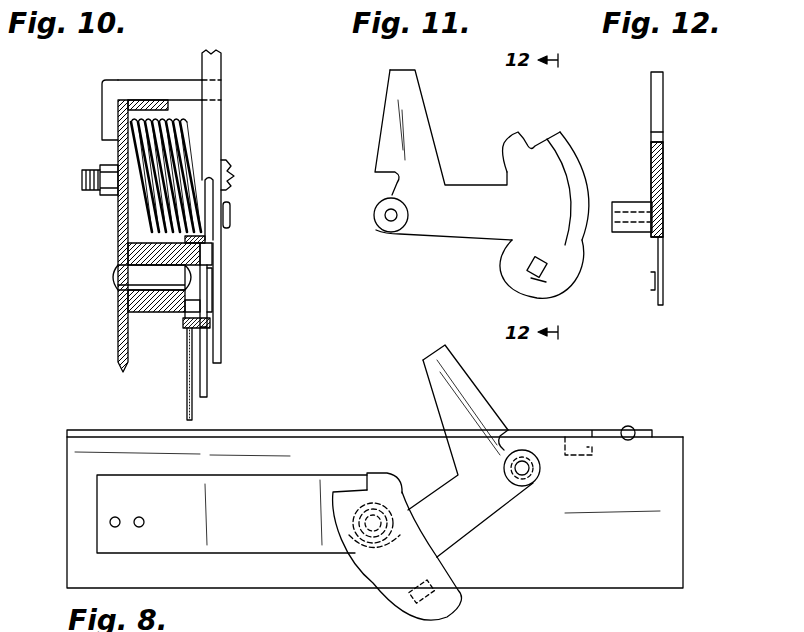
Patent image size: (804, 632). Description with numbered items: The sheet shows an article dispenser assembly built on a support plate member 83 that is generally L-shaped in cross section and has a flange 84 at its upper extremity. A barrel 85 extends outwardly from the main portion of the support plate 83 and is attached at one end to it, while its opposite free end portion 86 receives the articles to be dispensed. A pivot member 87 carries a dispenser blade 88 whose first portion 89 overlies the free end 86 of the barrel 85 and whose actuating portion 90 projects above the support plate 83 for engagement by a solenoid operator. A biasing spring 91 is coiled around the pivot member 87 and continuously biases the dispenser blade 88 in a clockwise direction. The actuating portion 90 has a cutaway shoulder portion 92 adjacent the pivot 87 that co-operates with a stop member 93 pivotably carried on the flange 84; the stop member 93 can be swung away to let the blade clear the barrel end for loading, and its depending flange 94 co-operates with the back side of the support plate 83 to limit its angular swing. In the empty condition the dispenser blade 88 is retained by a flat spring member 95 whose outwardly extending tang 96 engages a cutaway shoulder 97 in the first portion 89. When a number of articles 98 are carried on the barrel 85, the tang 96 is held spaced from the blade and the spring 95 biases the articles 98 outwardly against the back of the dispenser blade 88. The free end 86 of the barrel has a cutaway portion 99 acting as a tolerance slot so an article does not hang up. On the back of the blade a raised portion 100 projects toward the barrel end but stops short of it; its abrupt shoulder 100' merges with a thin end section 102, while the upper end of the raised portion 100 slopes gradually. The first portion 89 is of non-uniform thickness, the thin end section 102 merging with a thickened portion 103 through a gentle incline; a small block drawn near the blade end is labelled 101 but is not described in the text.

In FIG. 10, the support plate member 83 is at (118, 335).
In FIG. 8, the support plate member 83 is at (683, 532).
In FIG. 10, the flange 84 is at (140, 100).
In FIG. 8, the flange 84 is at (672, 437).
In FIG. 10, the barrel 85 is at (146, 305).
In FIG. 10, the free end portion 86 is at (212, 246).
In FIG. 10, the pivot member 87 is at (229, 163).
In FIG. 8, the pivot member 87 is at (528, 470).
In FIG. 10, the dispenser blade 88 is at (255, 108).
In FIG. 11, the dispenser blade 88 is at (415, 95).
In FIG. 8, the dispenser blade 88 is at (468, 395).
In FIG. 11, the first portion 89 is at (501, 272).
In FIG. 8, the first portion 89 is at (386, 595).
In FIG. 11, the actuating portion 90 is at (386, 96).
In FIG. 8, the actuating portion 90 is at (445, 360).
In FIG. 10, the biasing spring 91 is at (140, 195).
In FIG. 8, the cutaway shoulder portion 92 is at (508, 432).
In FIG. 10, the stop member 93 is at (173, 80).
In FIG. 8, the stop member 93 is at (552, 430).
In FIG. 10, the depending flange 94 is at (102, 117).
In FIG. 8, the depending flange 94 is at (592, 450).
In FIG. 10, the flat spring member 95 is at (182, 325).
In FIG. 8, the flat spring member 95 is at (198, 548).
In FIG. 10, the tang 96 is at (205, 240).
In FIG. 8, the tang 96 is at (367, 480).
In FIG. 8, the cutaway shoulder 97 is at (375, 503).
In FIG. 10, the articles 98 is at (207, 380).
In FIG. 10, the cutaway portion 99 is at (195, 310).
In FIG. 10, the raised portion 100 is at (236, 296).
In FIG. 11, the raised portion 100 is at (568, 291).
In FIG. 12, the raised portion 100 is at (629, 247).
In FIG. 10, the abrupt shoulder 100' is at (243, 290).
In FIG. 12, the abrupt shoulder 100' is at (627, 298).
In FIG. 10, the contact block 101 is at (212, 252).
In FIG. 11, the contact block 101 is at (547, 266).
In FIG. 8, the contact block 101 is at (421, 591).
In FIG. 10, the thin end section 102 is at (213, 210).
In FIG. 11, the thin end section 102 is at (583, 247).
In FIG. 12, the thin end section 102 is at (661, 306).
In FIG. 10, the thickened portion 103 is at (213, 140).
In FIG. 11, the thickened portion 103 is at (570, 167).
In FIG. 12, the thickened portion 103 is at (651, 160).